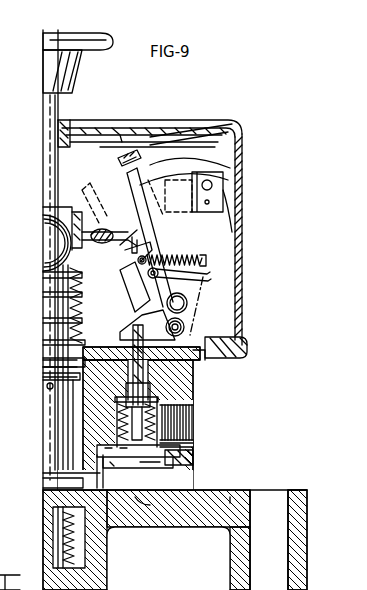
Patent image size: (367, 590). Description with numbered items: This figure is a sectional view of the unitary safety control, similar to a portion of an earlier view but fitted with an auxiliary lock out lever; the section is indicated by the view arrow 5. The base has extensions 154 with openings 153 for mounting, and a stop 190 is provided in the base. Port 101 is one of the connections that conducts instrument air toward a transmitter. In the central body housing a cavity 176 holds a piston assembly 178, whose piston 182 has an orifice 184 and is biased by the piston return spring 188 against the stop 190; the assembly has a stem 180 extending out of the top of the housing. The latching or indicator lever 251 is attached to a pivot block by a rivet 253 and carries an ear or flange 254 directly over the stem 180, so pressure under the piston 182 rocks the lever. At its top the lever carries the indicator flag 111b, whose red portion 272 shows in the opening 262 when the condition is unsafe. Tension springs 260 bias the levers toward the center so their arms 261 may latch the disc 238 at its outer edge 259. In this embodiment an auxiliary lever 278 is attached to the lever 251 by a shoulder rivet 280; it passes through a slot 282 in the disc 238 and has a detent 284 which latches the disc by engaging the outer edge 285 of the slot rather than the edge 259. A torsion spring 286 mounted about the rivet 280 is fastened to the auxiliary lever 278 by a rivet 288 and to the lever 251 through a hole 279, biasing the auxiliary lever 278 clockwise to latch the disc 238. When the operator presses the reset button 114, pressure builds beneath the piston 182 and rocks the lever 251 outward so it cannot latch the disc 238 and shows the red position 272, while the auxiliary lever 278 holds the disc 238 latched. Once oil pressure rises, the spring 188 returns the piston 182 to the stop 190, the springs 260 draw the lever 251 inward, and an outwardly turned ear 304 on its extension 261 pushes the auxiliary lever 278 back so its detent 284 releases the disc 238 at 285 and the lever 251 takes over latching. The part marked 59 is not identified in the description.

The view indicator arrow 5 is at (52, 0).
The reset button 114 is at (72, 67).
The red portion of indicator flag 272 is at (110, 135).
The indicator flag 111b is at (150, 160).
The cover opening 262 is at (166, 123).
The outwardly turned ear 304 is at (126, 162).
The auxiliary lever 278 is at (142, 164).
The lever arm 261 is at (183, 155).
The latching lever 251 is at (232, 203).
The outer edge of disc 259 is at (236, 234).
The disc 238 is at (62, 243).
The slot 282 is at (126, 238).
The tension spring 260 is at (140, 262).
The detent 284 is at (204, 260).
The outer edge of slot 285 is at (210, 277).
The hole 279 is at (188, 290).
The torsion spring 286 is at (188, 303).
The shoulder rivet 280 is at (184, 327).
The rivet 288 is at (140, 281).
The ear 254 is at (127, 325).
The spring assembly 59 is at (43, 338).
The rivet 253 is at (43, 366).
The stem 180 is at (152, 370).
The cavity 176 is at (115, 443).
The piston return spring 188 is at (119, 422).
The orifice 184 is at (105, 455).
The port 101 is at (192, 425).
The piston assembly 178 is at (191, 443).
The piston 182 is at (188, 462).
The stop 190 is at (175, 540).
The mounting opening 153 is at (282, 527).
The extension 154 is at (298, 490).